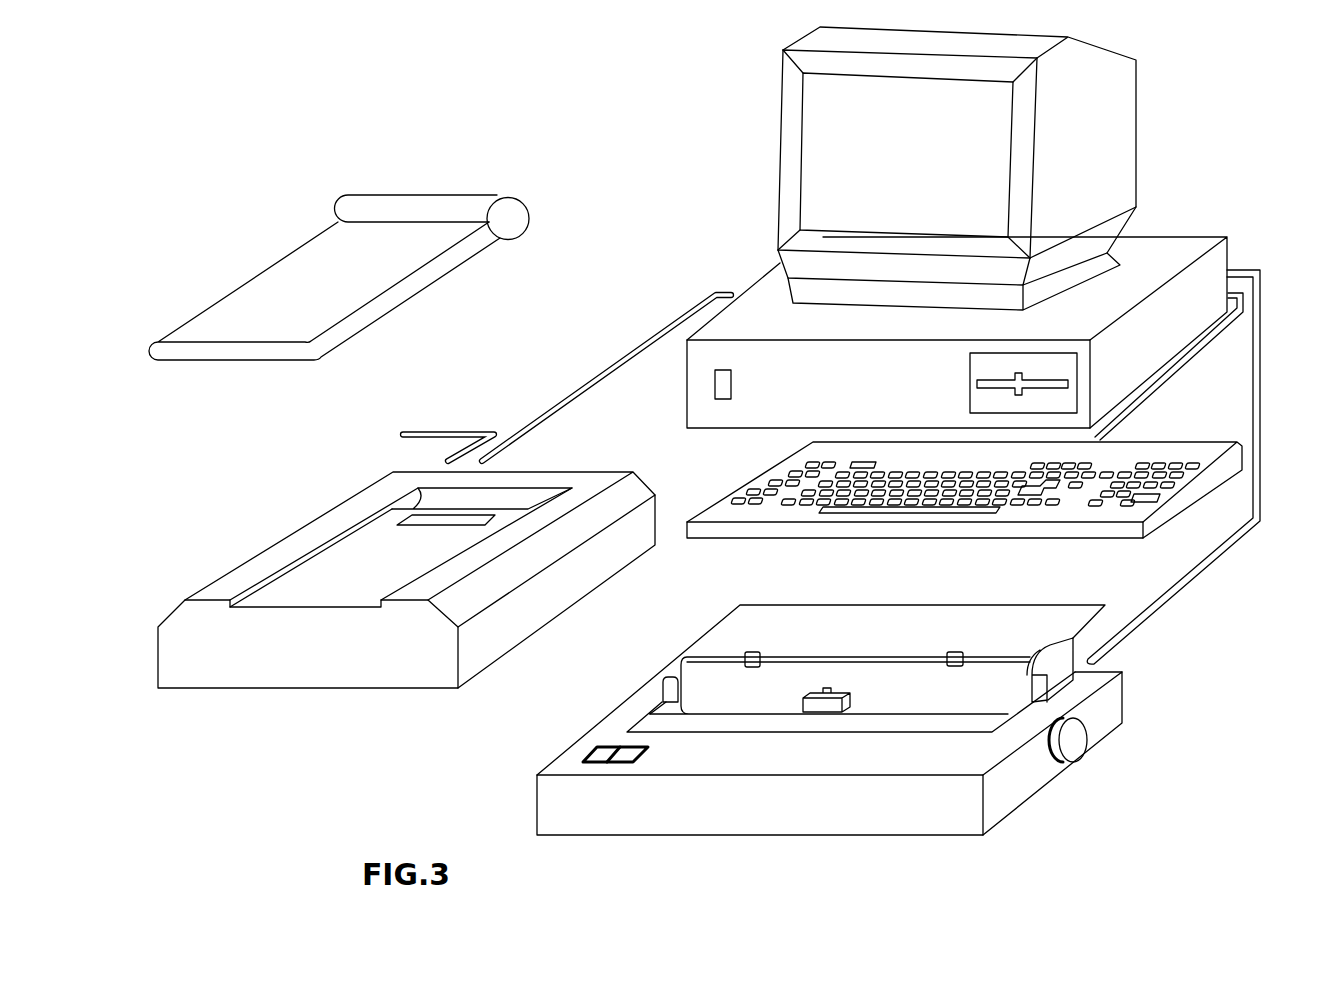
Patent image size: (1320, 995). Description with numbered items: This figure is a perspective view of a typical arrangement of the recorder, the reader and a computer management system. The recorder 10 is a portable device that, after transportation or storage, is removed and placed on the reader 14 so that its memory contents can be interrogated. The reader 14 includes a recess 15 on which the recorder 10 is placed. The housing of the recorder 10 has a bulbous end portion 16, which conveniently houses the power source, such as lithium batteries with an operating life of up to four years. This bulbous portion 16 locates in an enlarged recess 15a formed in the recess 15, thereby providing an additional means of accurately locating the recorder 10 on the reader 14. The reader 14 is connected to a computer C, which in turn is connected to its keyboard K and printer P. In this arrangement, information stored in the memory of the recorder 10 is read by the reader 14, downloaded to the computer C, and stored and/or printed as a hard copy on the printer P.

The recorder 10 is at (373, 250).
The bulbous end portion 16 is at (520, 217).
The reader 14 is at (406, 592).
The recess 15 is at (332, 595).
The enlarged recess 15a is at (478, 502).
The computer C is at (758, 128).
The keyboard K is at (768, 508).
The printer P is at (1100, 708).